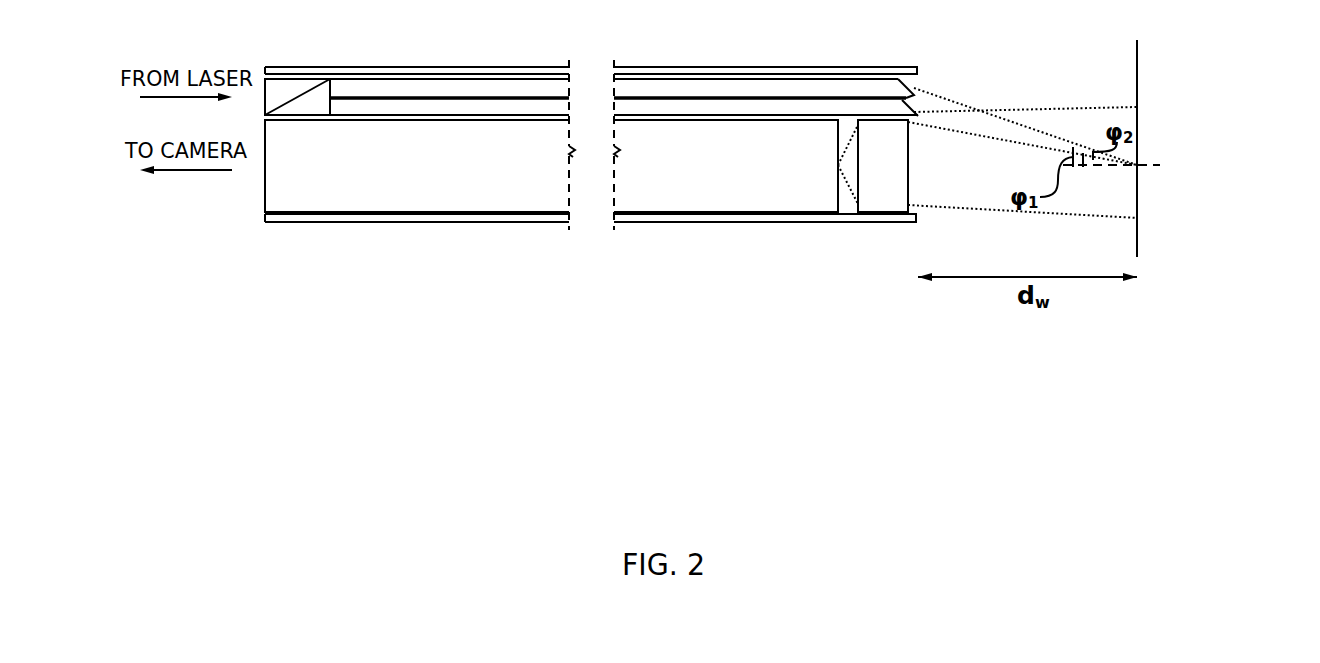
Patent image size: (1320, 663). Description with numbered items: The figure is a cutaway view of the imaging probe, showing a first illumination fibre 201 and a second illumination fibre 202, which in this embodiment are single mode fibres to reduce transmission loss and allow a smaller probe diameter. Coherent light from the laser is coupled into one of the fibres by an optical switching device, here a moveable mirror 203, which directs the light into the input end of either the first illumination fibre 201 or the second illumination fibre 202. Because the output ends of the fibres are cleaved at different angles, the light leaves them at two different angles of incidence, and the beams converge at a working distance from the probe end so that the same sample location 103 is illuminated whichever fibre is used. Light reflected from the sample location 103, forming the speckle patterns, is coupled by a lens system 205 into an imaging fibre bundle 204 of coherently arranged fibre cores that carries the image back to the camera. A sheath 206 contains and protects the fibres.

The sample location 103 is at (1160, 150).
The first illumination fibre 201 is at (903, 74).
The second illumination fibre 202 is at (720, 102).
The moveable mirror 203 is at (293, 83).
The imaging fibre bundle 204 is at (728, 202).
The lens system 205 is at (887, 202).
The sheath 206 is at (632, 216).